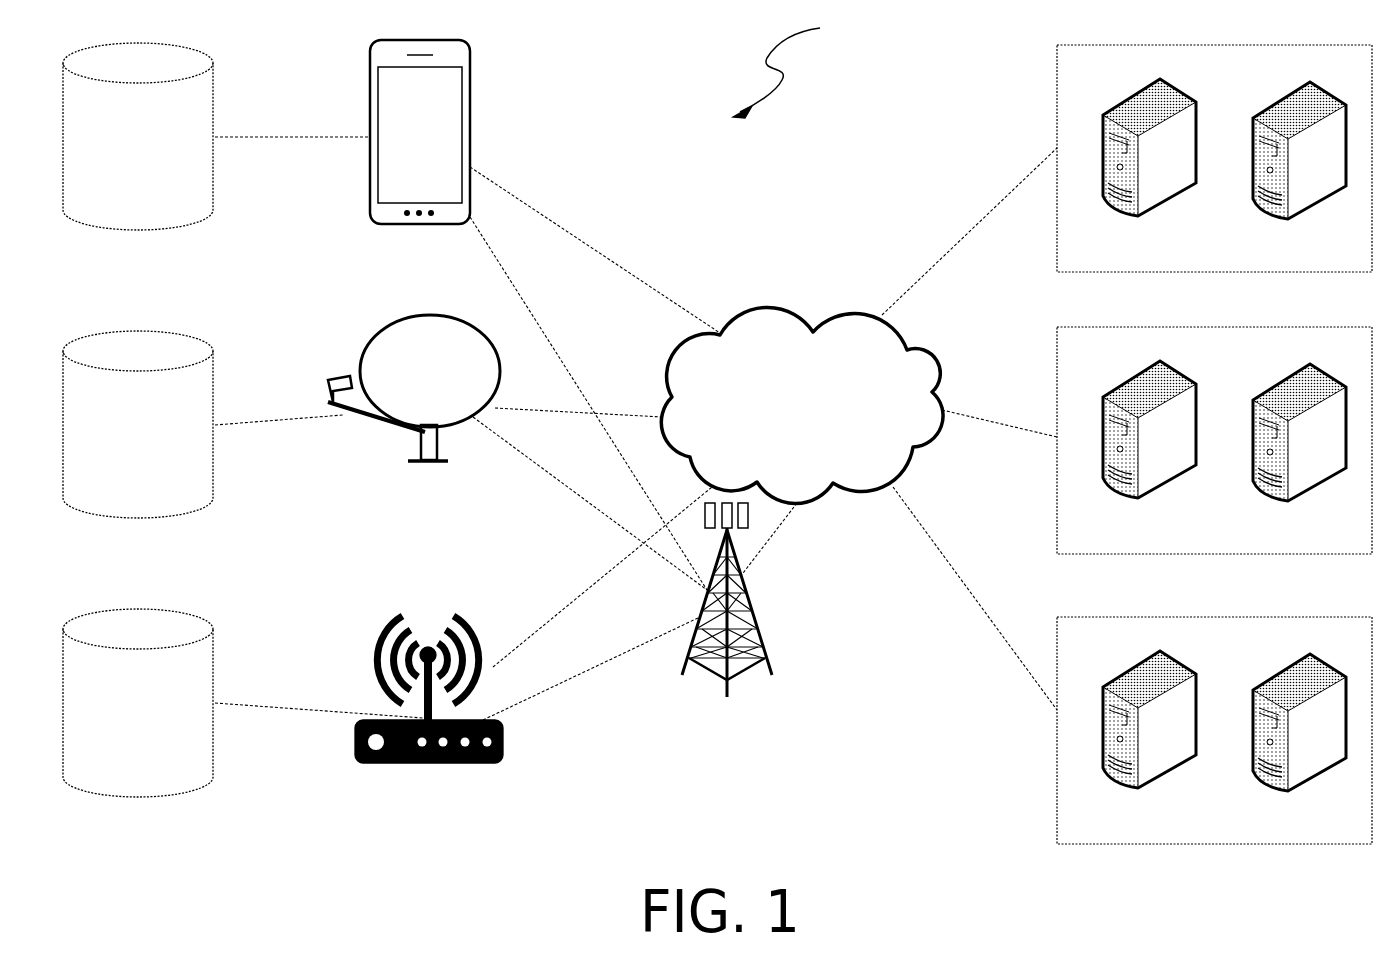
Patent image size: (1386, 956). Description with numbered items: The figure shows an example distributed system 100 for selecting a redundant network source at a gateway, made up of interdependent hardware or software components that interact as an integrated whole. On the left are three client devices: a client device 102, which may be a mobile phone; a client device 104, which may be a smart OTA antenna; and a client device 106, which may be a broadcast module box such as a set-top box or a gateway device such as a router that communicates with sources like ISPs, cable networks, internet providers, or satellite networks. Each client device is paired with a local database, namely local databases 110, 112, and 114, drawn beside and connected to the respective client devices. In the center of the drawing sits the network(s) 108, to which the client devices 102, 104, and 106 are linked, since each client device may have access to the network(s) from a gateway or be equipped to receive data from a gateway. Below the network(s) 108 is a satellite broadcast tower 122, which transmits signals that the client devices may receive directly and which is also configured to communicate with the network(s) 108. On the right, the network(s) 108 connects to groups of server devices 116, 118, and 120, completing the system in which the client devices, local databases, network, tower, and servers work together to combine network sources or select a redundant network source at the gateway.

The system 100 is at (797, 67).
The client device 102 is at (402, 154).
The client device 104 is at (402, 525).
The client device 106 is at (413, 814).
The network(s) 108 is at (784, 447).
The local database 110 is at (122, 151).
The local database 112 is at (122, 439).
The local database 114 is at (122, 716).
The server device 116 is at (1199, 257).
The server device 118 is at (1199, 539).
The server device 120 is at (1199, 829).
The satellite broadcast tower 122 is at (709, 747).